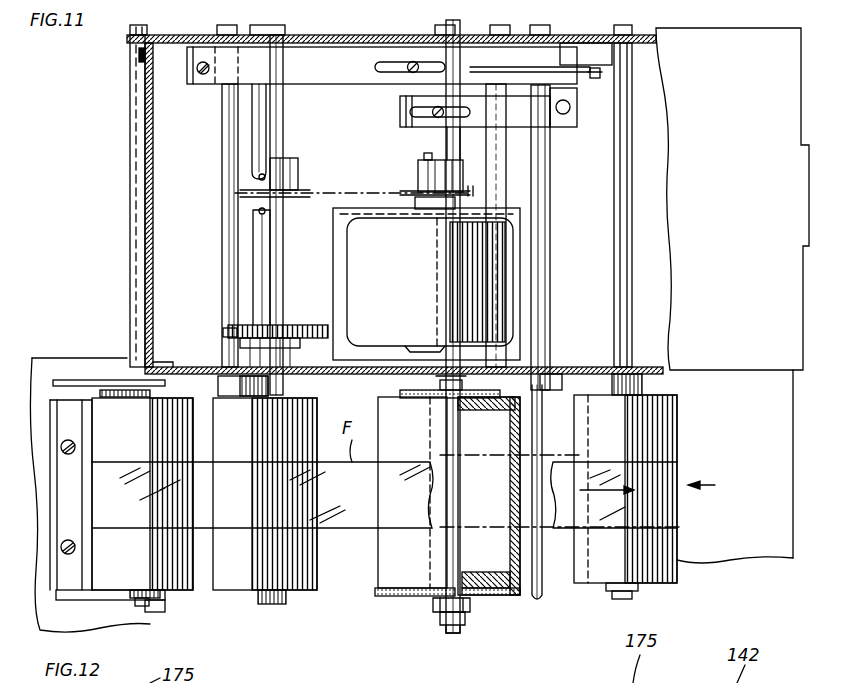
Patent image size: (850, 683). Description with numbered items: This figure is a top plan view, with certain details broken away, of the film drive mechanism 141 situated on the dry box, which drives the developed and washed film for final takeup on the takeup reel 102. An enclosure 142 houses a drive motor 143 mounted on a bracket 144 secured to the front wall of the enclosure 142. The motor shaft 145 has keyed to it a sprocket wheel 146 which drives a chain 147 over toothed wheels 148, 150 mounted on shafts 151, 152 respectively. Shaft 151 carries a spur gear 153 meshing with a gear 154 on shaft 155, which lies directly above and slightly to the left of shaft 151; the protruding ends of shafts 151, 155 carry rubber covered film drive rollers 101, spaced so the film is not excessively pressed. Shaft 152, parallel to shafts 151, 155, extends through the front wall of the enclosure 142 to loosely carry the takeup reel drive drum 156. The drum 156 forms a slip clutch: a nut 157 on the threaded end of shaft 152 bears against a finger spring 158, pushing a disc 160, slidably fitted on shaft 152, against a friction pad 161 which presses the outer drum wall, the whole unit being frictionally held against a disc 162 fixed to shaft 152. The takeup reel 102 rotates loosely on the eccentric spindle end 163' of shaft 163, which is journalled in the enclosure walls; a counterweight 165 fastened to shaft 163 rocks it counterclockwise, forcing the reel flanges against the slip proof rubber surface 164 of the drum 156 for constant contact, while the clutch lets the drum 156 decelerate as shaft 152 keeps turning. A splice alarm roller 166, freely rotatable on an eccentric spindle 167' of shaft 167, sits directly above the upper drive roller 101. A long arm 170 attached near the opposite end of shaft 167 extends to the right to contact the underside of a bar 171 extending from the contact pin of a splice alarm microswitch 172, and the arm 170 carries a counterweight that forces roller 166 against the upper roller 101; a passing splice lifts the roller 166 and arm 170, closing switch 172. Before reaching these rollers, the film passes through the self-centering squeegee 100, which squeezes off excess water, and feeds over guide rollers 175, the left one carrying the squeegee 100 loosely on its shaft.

The self-centering squeegee 100 is at (75, 362).
The rubber covered film drive rollers 101 is at (303, 590).
The takeup reel 102 is at (588, 450).
The film drive mechanism 141 is at (719, 485).
The enclosure 142 is at (752, 40).
The drive motor 143 is at (355, 232).
The bracket 144 is at (352, 362).
The motor shaft 145 is at (425, 158).
The sprocket wheel 146 is at (428, 192).
The chain 147 is at (340, 186).
The toothed wheel 148 is at (293, 190).
The toothed wheel 150 is at (460, 188).
The shaft 151 is at (278, 100).
The shaft 152 is at (450, 26).
The spur gear 153 is at (315, 325).
The gear 154 is at (238, 325).
The shaft 155 is at (262, 266).
The takeup reel drive drum 156 is at (395, 546).
The nut 157 is at (437, 612).
The finger spring 158 is at (468, 612).
The disc 160 is at (383, 596).
The friction pad 161 is at (508, 600).
The disc 162 is at (418, 392).
The shaft 163 is at (581, 207).
The eccentric spindle end 163' is at (566, 513).
The slip proof rubber surface 164 is at (512, 405).
The counterweight 165 is at (410, 111).
The splice alarm roller 166 is at (238, 590).
The shaft 167 is at (391, 196).
The eccentric spindle 167' is at (210, 518).
The long arm 170 is at (335, 62).
The bar 171 is at (481, 66).
The splice alarm microswitch 172 is at (590, 52).
The guide rollers 175 is at (185, 590).